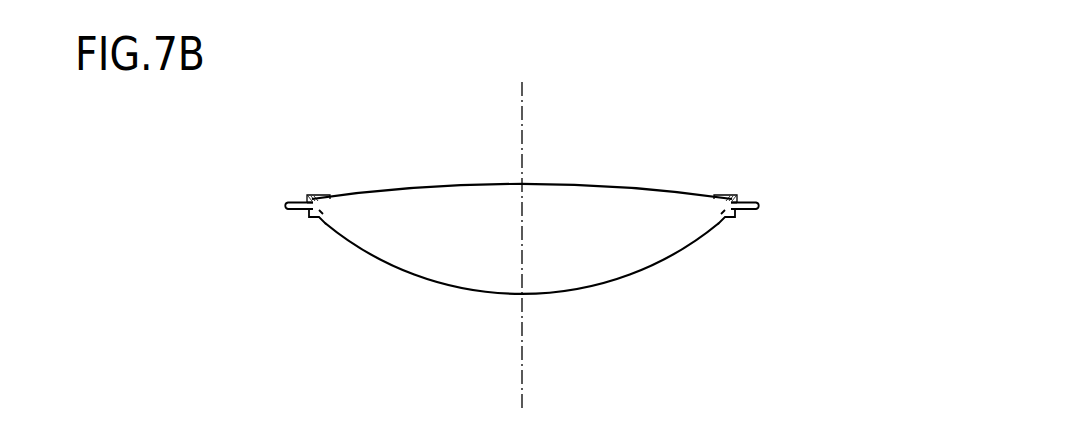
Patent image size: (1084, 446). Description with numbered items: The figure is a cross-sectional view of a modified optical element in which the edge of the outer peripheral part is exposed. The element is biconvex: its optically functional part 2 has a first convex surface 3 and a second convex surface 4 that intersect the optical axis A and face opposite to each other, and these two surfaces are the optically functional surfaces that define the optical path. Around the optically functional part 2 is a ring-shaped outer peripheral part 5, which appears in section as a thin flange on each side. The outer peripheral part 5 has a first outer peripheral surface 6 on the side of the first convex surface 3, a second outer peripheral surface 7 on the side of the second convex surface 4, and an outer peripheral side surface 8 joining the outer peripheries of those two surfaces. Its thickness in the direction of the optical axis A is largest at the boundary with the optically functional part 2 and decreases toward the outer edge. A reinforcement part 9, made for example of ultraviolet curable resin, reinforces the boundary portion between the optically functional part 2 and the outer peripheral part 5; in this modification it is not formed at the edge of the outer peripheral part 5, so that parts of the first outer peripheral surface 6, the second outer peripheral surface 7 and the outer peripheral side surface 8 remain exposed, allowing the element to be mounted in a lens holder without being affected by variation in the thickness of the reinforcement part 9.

The optically functional part 2 is at (522, 242).
The first convex surface 3 is at (582, 184).
The second convex surface 4 is at (552, 295).
The outer peripheral part 5 is at (264, 208).
The first outer peripheral surface 6 is at (290, 201).
The second outer peripheral surface 7 is at (289, 211).
The outer peripheral side surface 8 is at (283, 206).
The reinforcement part 9 is at (306, 193).
The optical axis A is at (520, 123).